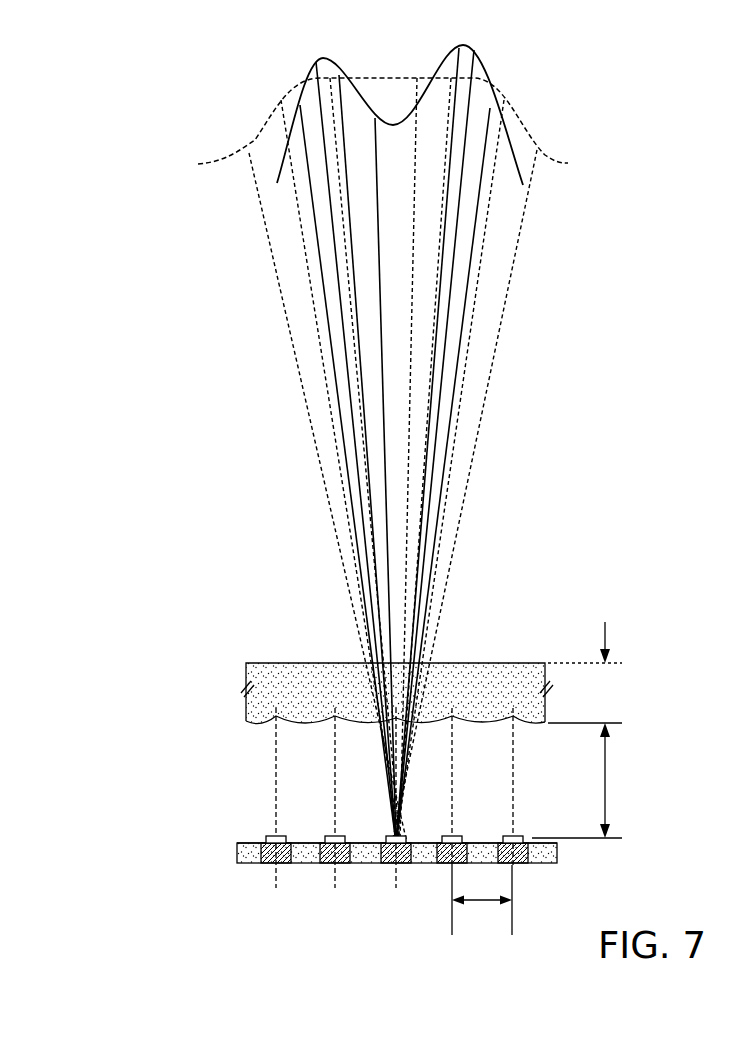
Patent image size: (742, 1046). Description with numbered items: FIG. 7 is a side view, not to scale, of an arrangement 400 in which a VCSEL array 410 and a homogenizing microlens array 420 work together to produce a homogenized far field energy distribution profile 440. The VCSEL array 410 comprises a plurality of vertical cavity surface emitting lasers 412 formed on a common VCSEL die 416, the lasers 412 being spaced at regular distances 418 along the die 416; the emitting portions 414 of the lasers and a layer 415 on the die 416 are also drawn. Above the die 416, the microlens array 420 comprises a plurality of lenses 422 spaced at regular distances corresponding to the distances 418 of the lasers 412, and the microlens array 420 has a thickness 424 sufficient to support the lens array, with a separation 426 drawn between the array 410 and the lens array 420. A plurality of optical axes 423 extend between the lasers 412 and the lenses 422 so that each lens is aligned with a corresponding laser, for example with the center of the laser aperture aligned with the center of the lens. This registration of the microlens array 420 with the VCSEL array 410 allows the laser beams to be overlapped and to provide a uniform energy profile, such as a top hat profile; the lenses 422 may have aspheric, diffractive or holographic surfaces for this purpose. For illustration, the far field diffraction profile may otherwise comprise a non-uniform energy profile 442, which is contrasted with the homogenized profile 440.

The light source device 400 is at (245, 582).
The VCSEL array 410 is at (167, 770).
The vertical cavity surface emitting lasers 412 is at (323, 866).
The emission regions 414 is at (510, 836).
The electrode layer 415 is at (253, 840).
The VCSEL die 416 is at (237, 853).
The regular distances 418 is at (478, 902).
The microlens array 420 is at (310, 676).
The lenses 422 is at (330, 725).
The optical axes 423 is at (276, 793).
The thickness 424 is at (608, 633).
The distance between array and optical element 426 is at (607, 780).
The homogenized far field energy distribution profile 440 is at (226, 168).
The non-uniform energy profile 442 is at (283, 143).